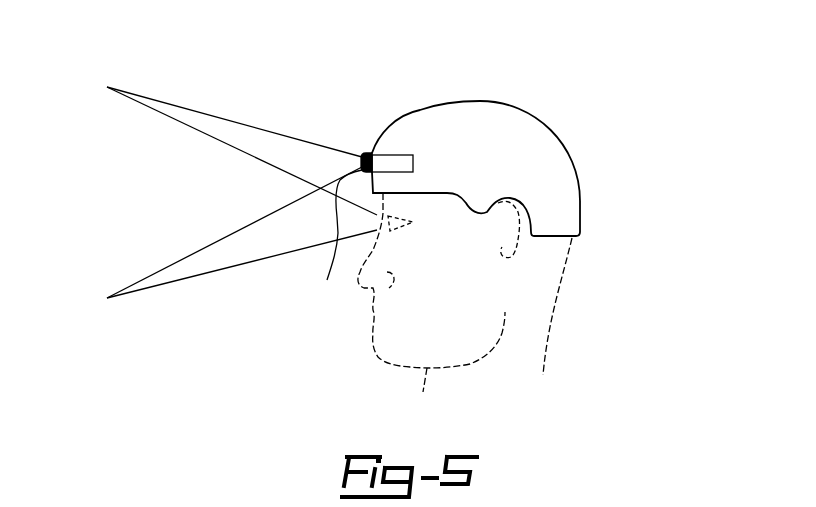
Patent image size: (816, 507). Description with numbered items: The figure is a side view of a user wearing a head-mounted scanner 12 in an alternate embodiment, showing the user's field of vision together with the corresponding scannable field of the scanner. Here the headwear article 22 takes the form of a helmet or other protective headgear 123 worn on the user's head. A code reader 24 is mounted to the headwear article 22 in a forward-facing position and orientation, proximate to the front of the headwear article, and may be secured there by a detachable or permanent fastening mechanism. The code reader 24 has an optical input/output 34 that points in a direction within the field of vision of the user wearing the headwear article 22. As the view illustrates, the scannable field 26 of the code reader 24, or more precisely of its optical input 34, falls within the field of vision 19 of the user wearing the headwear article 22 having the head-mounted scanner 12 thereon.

The head-mounted scanner 12 is at (407, 144).
The field of vision 19 is at (274, 257).
The headwear article 22 is at (426, 99).
The code reader 24 is at (392, 162).
The scannable field 26 is at (265, 130).
The optical input/output 34 is at (334, 241).
The helmet or other protective headgear 123 is at (553, 142).